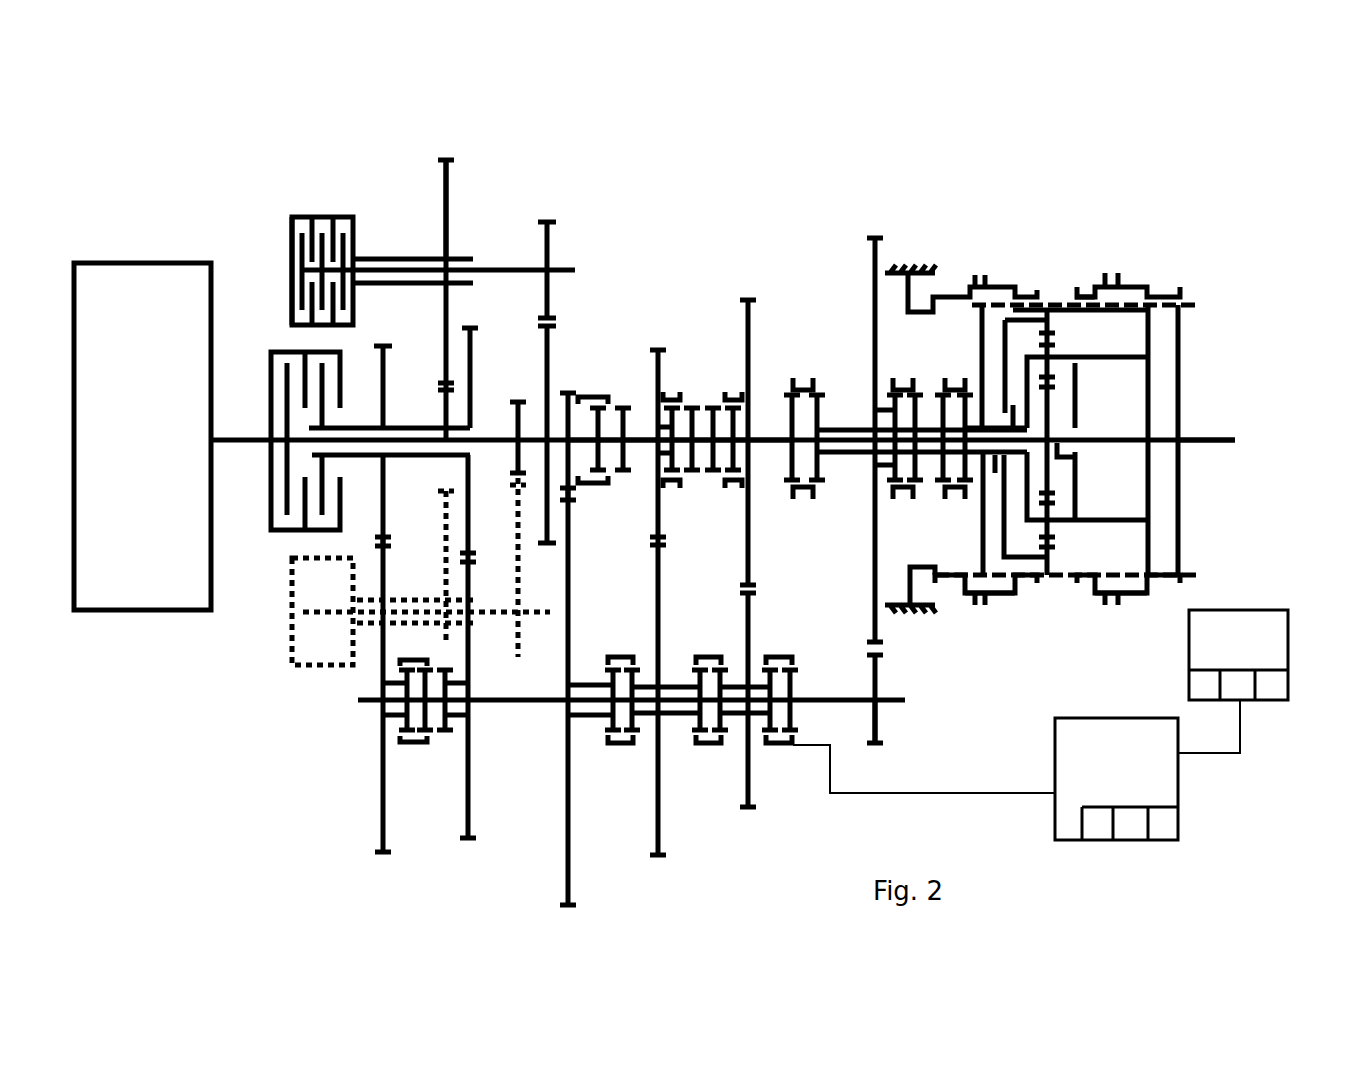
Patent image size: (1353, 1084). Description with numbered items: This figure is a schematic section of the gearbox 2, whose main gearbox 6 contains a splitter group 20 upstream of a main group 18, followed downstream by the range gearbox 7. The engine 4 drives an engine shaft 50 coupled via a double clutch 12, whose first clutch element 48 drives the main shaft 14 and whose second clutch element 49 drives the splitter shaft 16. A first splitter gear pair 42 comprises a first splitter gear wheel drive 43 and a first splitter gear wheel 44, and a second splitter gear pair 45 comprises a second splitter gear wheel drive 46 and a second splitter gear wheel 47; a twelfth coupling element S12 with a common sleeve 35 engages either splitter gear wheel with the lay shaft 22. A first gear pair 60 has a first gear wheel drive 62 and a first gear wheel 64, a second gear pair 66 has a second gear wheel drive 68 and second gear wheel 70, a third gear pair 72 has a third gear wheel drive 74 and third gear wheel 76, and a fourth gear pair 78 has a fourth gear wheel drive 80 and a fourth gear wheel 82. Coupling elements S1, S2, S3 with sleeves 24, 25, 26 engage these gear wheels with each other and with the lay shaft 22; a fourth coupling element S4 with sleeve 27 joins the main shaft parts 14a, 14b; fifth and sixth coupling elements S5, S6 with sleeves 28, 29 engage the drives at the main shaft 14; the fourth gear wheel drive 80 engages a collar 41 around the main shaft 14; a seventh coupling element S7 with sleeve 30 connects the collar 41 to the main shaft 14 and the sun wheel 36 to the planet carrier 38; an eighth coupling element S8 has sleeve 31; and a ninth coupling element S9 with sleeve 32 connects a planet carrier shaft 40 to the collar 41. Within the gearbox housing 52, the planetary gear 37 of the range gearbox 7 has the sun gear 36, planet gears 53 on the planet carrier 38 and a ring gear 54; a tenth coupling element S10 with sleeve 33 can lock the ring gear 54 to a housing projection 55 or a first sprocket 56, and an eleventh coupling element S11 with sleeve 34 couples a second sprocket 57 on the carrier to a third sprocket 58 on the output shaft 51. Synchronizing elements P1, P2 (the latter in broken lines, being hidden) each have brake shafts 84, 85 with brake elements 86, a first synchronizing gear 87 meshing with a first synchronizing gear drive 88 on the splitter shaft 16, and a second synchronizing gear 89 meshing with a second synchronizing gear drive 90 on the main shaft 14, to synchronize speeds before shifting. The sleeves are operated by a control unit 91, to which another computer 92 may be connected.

The gearbox 2 is at (782, 168).
The engine 4 is at (165, 263).
The main gearbox 6 is at (660, 165).
The range gearbox 7 is at (1068, 228).
The double clutch 12 is at (270, 350).
The main shaft 14 is at (645, 420).
The first part of the main shaft 14a is at (490, 425).
The second part of the main shaft 14b is at (768, 470).
The splitter shaft 16 is at (430, 456).
The main group 18 is at (628, 238).
The splitter group 20 is at (420, 378).
The lay shaft 22 is at (527, 705).
The first coupling sleeve 24 is at (620, 656).
The second coupling sleeve 25 is at (700, 655).
The third coupling sleeve 26 is at (795, 658).
The fourth coupling sleeve 27 is at (600, 490).
The fifth coupling sleeve 28 is at (672, 490).
The sixth coupling sleeve 29 is at (730, 490).
The seventh coupling sleeve 30 is at (805, 500).
The eighth coupling sleeve 31 is at (905, 500).
The ninth sleeve 32 is at (962, 500).
The tenth coupling sleeve 33 is at (1000, 600).
The eleventh coupling sleeve 34 is at (1125, 600).
The twelfth sleeve 35 is at (400, 742).
The sun gear 36 is at (1062, 492).
The planetary gear 37 is at (1110, 395).
The planet carrier 38 is at (1075, 523).
The planet carrier shaft 40 is at (990, 428).
The collar 41 is at (842, 425).
The first splitter gear pair 42 is at (350, 540).
The first splitter gear wheel drive 43 is at (380, 410).
The first splitter gear wheel 44 is at (380, 820).
The second splitter gear pair 45 is at (492, 560).
The second splitter gear wheel drive 46 is at (473, 348).
The second splitter gear wheel 47 is at (472, 825).
The first clutch element 48 is at (288, 408).
The second clutch element 49 is at (322, 482).
The engine shaft 50 is at (275, 432).
The output shaft 51 is at (1205, 445).
The gearbox housing 52 is at (906, 266).
The planet gears 53 is at (1050, 560).
The ring gear 54 is at (1058, 305).
The projection 55 is at (935, 292).
The first sprocket 56 is at (960, 578).
The second sprocket 57 is at (1160, 325).
The third sprocket 58 is at (1185, 395).
The first gear pair 60 is at (588, 515).
The first gear wheel drive 62 is at (568, 390).
The first gear wheel 64 is at (578, 825).
The second gear pair 66 is at (676, 560).
The second gear wheel drive 68 is at (656, 375).
The second gear wheel 70 is at (664, 830).
The third gear pair 72 is at (770, 596).
The third gear wheel drive 74 is at (748, 292).
The third gear wheel 76 is at (752, 805).
The fourth gear pair 78 is at (898, 660).
The fourth gear wheel drive 80 is at (872, 290).
The fourth gear wheel 82 is at (880, 725).
The first brake shaft 84 is at (375, 255).
The second brake shaft 85 is at (422, 258).
The brake elements 86 is at (316, 195).
The first synchronizing gear 87 is at (545, 245).
The first synchronizing gear drive 88 is at (540, 505).
The second synchronizing gear 89 is at (452, 165).
The second synchronizing gear drive 90 is at (444, 497).
The control unit 91 is at (1180, 796).
The computer 92 is at (1265, 610).
The first synchronizing element P1 is at (292, 236).
The second synchronizing element P2 is at (290, 632).
The first coupling element S1 is at (614, 770).
The second coupling element S2 is at (702, 770).
The third coupling element S3 is at (784, 770).
The fourth coupling element S4 is at (600, 380).
The fifth coupling element S5 is at (676, 375).
The sixth coupling element S6 is at (722, 378).
The seventh coupling element S7 is at (812, 365).
The eighth coupling element S8 is at (904, 378).
The ninth coupling element S9 is at (962, 378).
The tenth coupling element S10 is at (976, 630).
The eleventh coupling element S11 is at (1110, 635).
The twelfth coupling element S12 is at (424, 770).